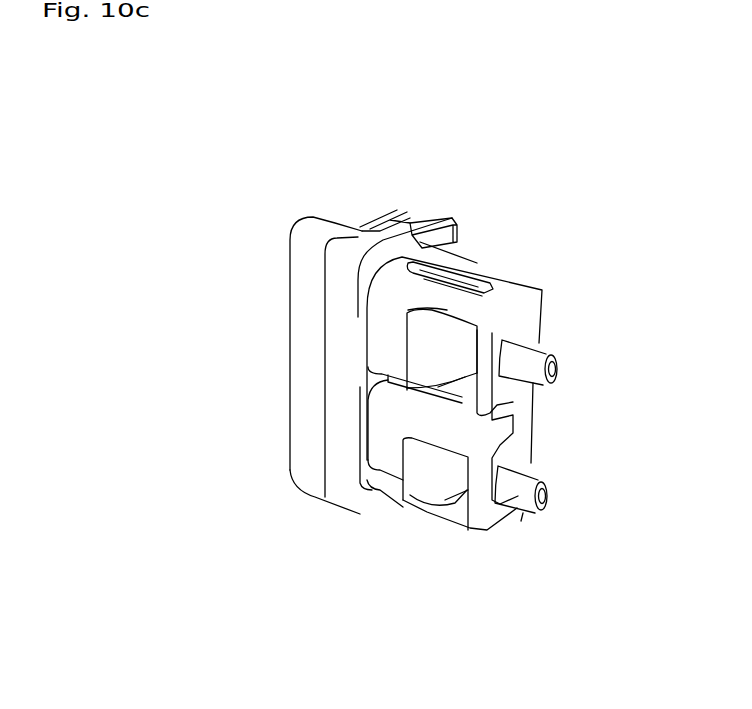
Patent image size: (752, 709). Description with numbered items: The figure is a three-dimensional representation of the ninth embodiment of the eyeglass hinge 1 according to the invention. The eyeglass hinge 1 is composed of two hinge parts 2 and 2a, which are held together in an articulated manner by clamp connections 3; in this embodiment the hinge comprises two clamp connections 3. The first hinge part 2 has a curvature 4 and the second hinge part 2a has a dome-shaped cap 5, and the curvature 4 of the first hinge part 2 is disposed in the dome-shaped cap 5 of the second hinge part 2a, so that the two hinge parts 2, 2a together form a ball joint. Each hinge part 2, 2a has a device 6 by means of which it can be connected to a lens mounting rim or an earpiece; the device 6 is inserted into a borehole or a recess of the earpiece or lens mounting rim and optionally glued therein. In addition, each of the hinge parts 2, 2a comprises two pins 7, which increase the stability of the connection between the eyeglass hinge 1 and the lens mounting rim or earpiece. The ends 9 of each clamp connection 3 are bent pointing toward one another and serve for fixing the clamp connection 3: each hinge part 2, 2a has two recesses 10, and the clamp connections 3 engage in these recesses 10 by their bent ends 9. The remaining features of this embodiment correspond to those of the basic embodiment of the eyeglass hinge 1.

The eyeglass hinge 1 is at (292, 85).
The hinge part 2 is at (402, 208).
The hinge part 2a is at (517, 290).
The clamp connection 3 is at (465, 353).
The curvature 4 is at (330, 224).
The dome-shaped cap 5 is at (387, 230).
The device 6 is at (408, 215).
The pin 7 is at (530, 360).
The bent end 9 is at (418, 362).
The recess 10 is at (457, 387).